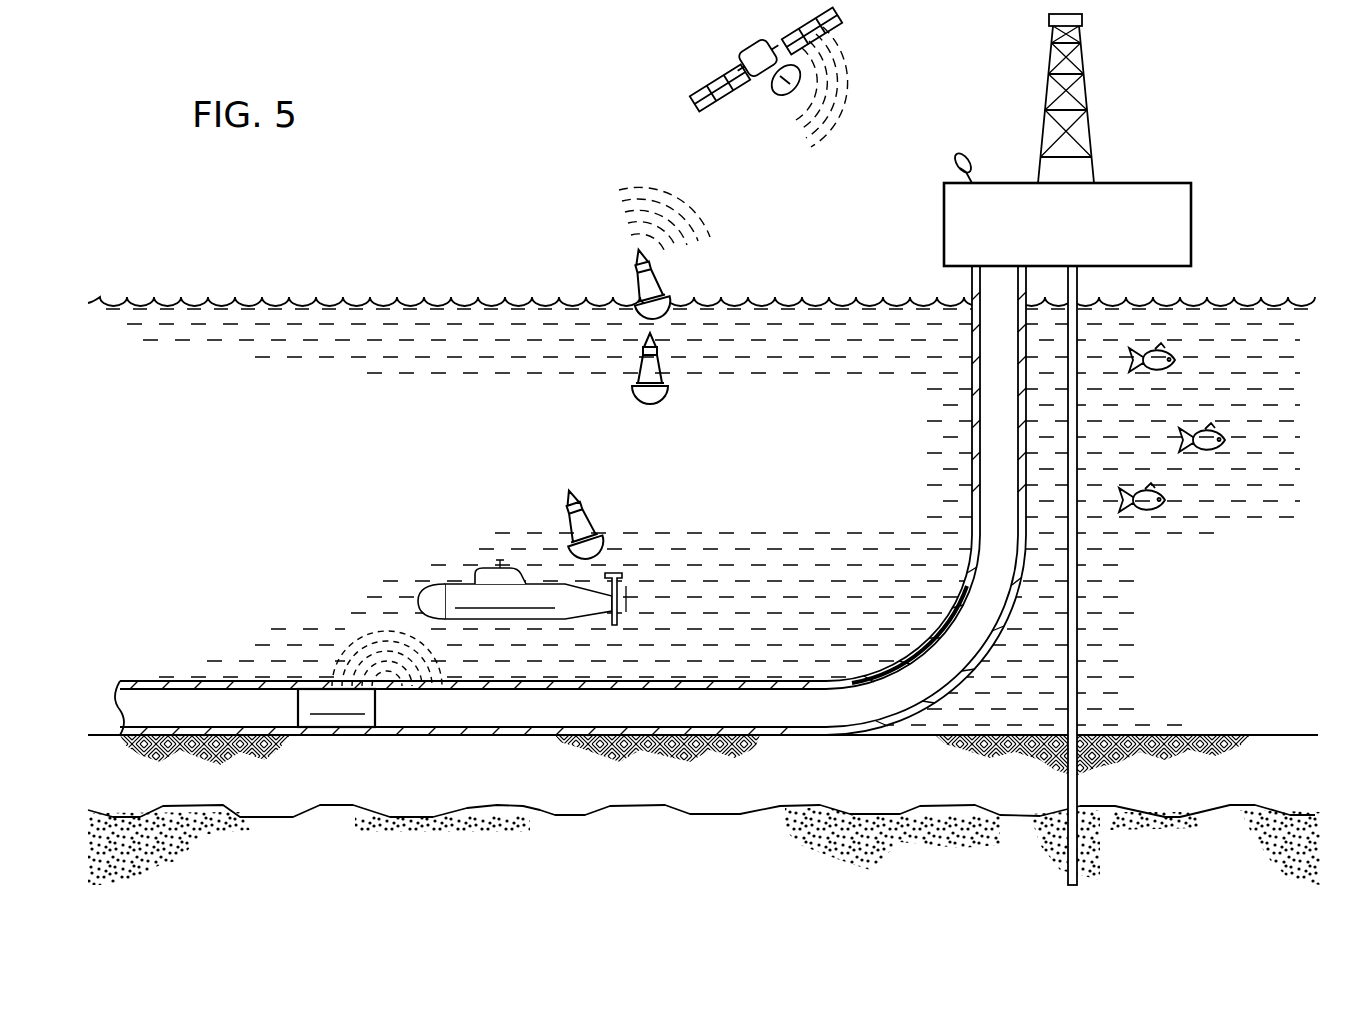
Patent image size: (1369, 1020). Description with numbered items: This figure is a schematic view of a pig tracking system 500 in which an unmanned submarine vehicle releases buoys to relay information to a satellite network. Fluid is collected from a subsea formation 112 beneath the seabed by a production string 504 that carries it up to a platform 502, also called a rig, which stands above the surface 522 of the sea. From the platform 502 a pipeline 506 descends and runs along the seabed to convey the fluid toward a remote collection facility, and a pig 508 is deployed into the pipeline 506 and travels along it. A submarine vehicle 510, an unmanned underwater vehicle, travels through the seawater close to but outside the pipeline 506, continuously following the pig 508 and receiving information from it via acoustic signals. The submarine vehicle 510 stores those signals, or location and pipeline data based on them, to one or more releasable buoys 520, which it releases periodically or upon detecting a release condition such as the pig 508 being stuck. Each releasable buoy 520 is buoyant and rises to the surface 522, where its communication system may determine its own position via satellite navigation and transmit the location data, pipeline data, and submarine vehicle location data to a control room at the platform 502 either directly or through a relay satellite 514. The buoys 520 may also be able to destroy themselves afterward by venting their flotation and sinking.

The pig tracking system 500 is at (470, 56).
The platform 502 is at (1086, 90).
The production string 504 is at (1078, 628).
The pipeline 506 is at (966, 462).
The pig 508 is at (333, 730).
The submarine vehicle 510 is at (512, 622).
The satellite 514 is at (722, 80).
The releasable buoy 520 is at (641, 262).
The surface 522 is at (362, 303).
The subsea formation 112 is at (1288, 814).